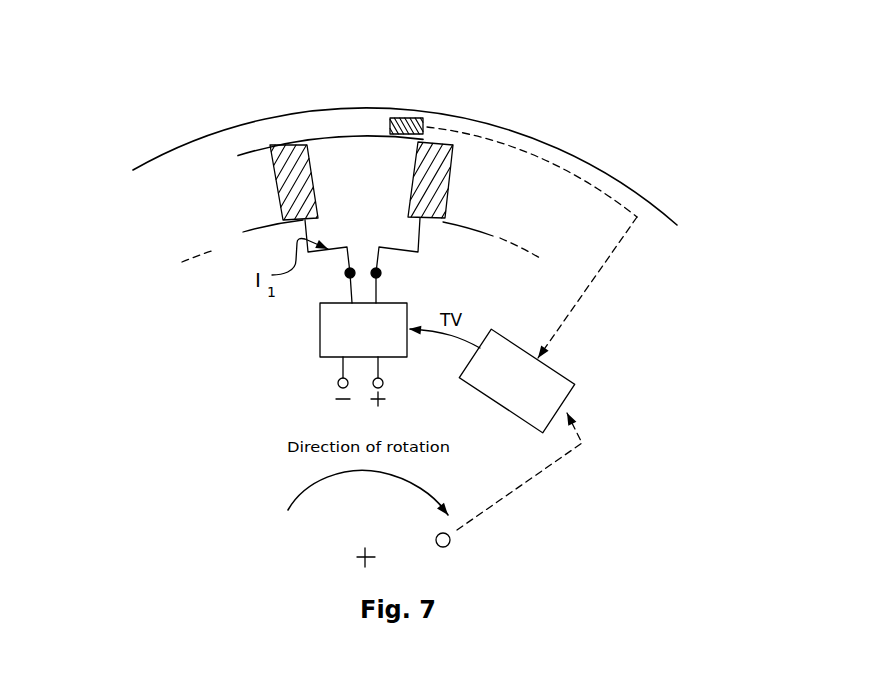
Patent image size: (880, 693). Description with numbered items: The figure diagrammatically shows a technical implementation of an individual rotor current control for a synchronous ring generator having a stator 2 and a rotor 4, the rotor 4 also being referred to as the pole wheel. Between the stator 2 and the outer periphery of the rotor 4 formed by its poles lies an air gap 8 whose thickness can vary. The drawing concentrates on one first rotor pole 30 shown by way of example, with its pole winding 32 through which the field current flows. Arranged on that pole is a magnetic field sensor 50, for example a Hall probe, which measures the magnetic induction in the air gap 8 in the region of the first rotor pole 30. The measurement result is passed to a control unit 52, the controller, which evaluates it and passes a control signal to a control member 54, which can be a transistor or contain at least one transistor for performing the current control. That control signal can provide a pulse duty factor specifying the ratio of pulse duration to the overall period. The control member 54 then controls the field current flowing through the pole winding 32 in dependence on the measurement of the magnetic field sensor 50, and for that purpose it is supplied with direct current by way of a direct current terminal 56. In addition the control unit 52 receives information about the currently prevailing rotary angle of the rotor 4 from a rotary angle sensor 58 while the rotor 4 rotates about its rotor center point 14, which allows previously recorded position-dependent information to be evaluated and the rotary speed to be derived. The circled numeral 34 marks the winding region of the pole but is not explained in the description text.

The stator 2 is at (579, 153).
The first rotor pole 30 is at (292, 112).
The air gap 8 is at (360, 117).
The pole winding 32 is at (287, 175).
The coil winding 34 is at (362, 229).
The rotor 4 is at (225, 298).
The magnetic field sensor 50 is at (409, 115).
The control unit 52 is at (563, 379).
The control member 54 is at (328, 336).
The direct current terminal 56 is at (358, 381).
The rotary angle sensor 58 is at (452, 545).
The rotor center point 14 is at (364, 557).